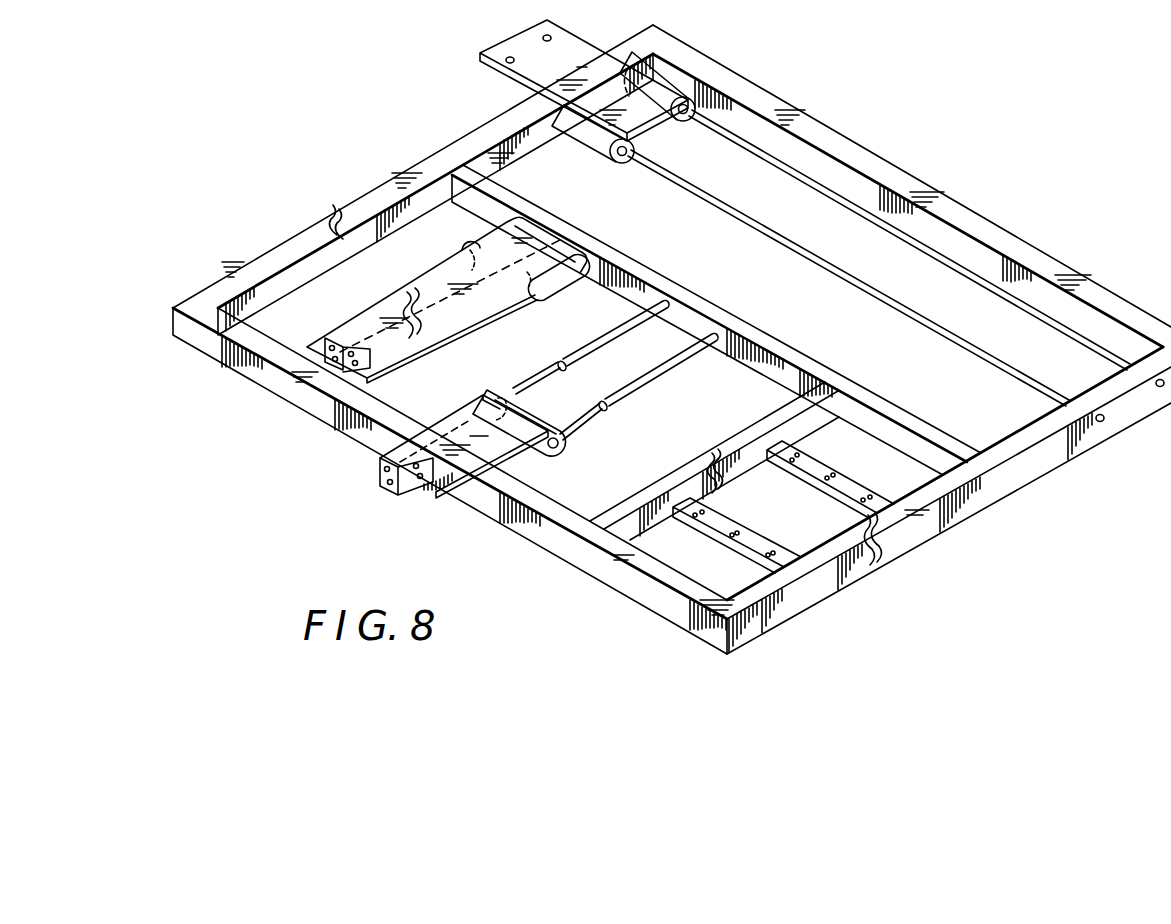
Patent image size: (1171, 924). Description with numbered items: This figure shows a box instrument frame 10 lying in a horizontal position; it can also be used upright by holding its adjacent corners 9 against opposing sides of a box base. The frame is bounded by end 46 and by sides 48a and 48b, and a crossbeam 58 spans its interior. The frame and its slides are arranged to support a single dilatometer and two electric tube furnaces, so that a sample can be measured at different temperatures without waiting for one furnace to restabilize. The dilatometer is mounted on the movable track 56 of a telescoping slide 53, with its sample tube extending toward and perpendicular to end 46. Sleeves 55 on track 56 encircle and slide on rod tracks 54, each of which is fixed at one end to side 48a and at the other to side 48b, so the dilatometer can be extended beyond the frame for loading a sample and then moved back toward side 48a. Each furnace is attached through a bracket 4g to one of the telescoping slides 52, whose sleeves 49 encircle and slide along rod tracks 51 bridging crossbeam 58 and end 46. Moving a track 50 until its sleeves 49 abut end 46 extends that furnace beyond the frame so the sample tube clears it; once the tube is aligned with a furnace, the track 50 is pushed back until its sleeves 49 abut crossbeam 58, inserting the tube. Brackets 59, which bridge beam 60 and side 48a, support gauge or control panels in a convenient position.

The box instrument frame 10 is at (653, 353).
The corner 9 is at (190, 312).
The end 46 is at (352, 442).
The side 48a is at (830, 585).
The side 48b is at (262, 258).
The crossbeam 58 is at (826, 380).
The bracket 59 is at (862, 474).
The beam 60 is at (656, 520).
The track 50 is at (446, 500).
The bracket 4g is at (409, 492).
The telescoping slide 52 is at (475, 380).
The sleeve 49 is at (559, 445).
The rod track 51 is at (658, 382).
The movable track 56 is at (527, 78).
The telescoping slide 53 is at (706, 133).
The sleeve 55 is at (626, 164).
The rod track 54 is at (877, 230).